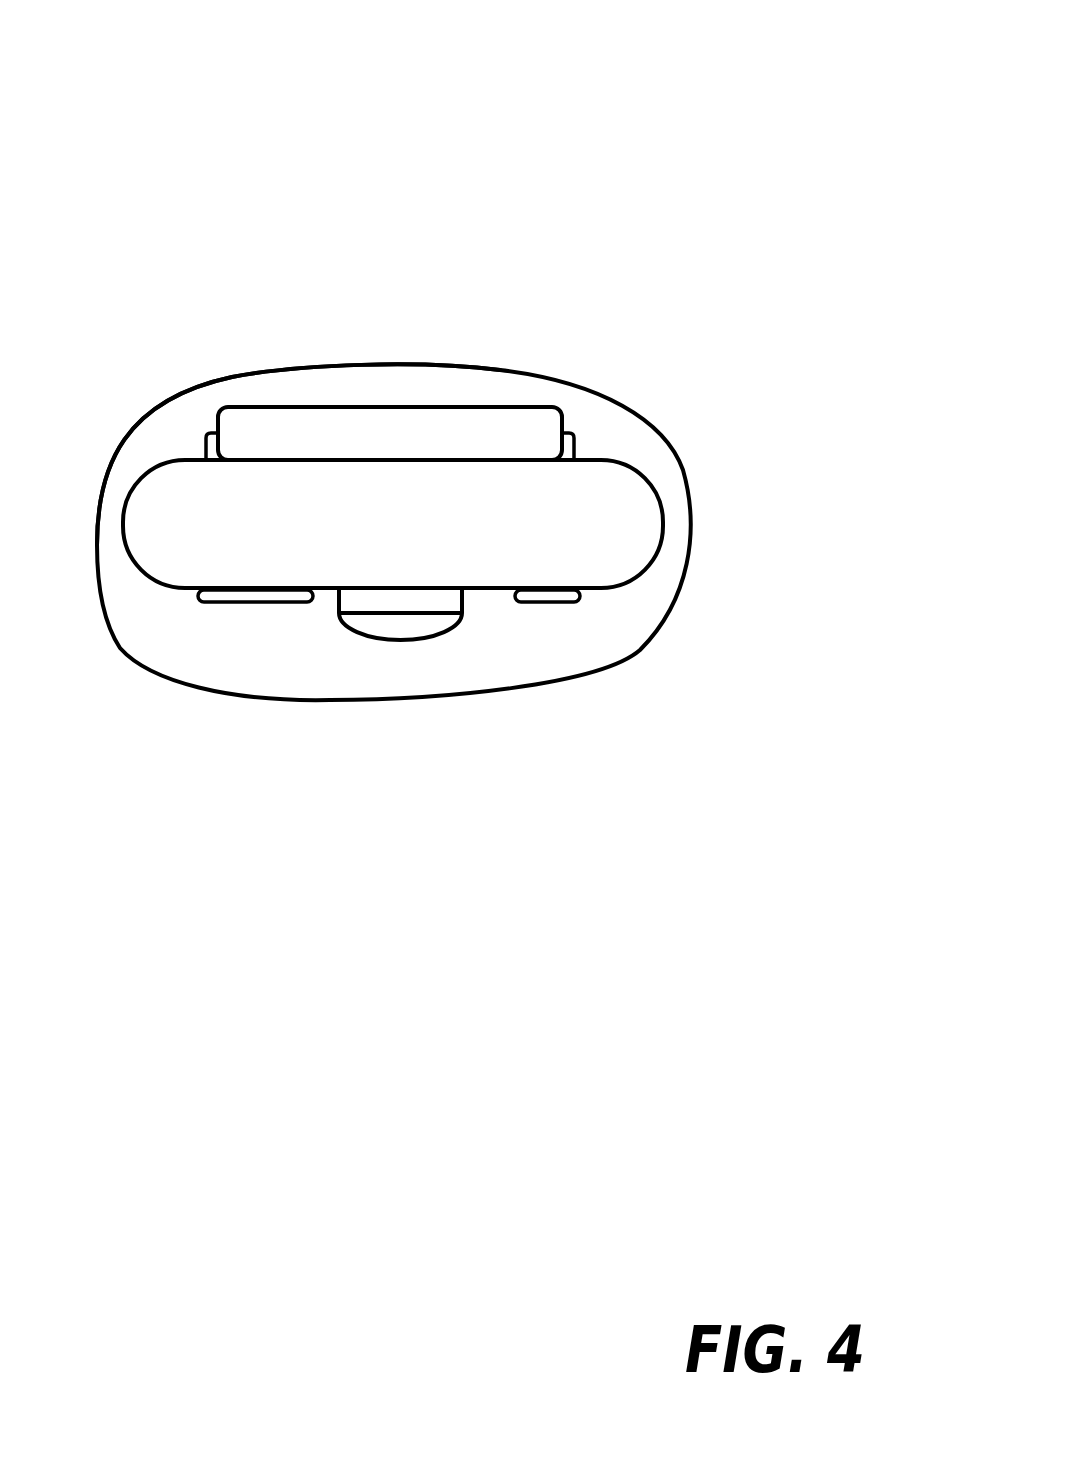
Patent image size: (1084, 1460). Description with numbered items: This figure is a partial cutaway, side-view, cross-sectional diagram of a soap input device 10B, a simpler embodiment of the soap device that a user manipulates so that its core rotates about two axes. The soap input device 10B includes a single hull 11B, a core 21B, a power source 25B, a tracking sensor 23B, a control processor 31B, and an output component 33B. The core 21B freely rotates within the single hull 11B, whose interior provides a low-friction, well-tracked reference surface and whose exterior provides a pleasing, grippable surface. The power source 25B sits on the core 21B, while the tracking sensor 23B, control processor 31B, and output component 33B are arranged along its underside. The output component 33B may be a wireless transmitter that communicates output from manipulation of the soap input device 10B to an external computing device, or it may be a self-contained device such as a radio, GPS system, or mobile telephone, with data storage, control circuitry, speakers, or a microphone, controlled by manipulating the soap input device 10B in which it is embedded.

The soap input device 10B is at (801, 198).
The single hull 11B is at (232, 363).
The core 21B is at (615, 446).
The power source 25B is at (397, 393).
The tracking sensor 23B is at (401, 656).
The control processor 31B is at (254, 616).
The output component 33B is at (566, 616).